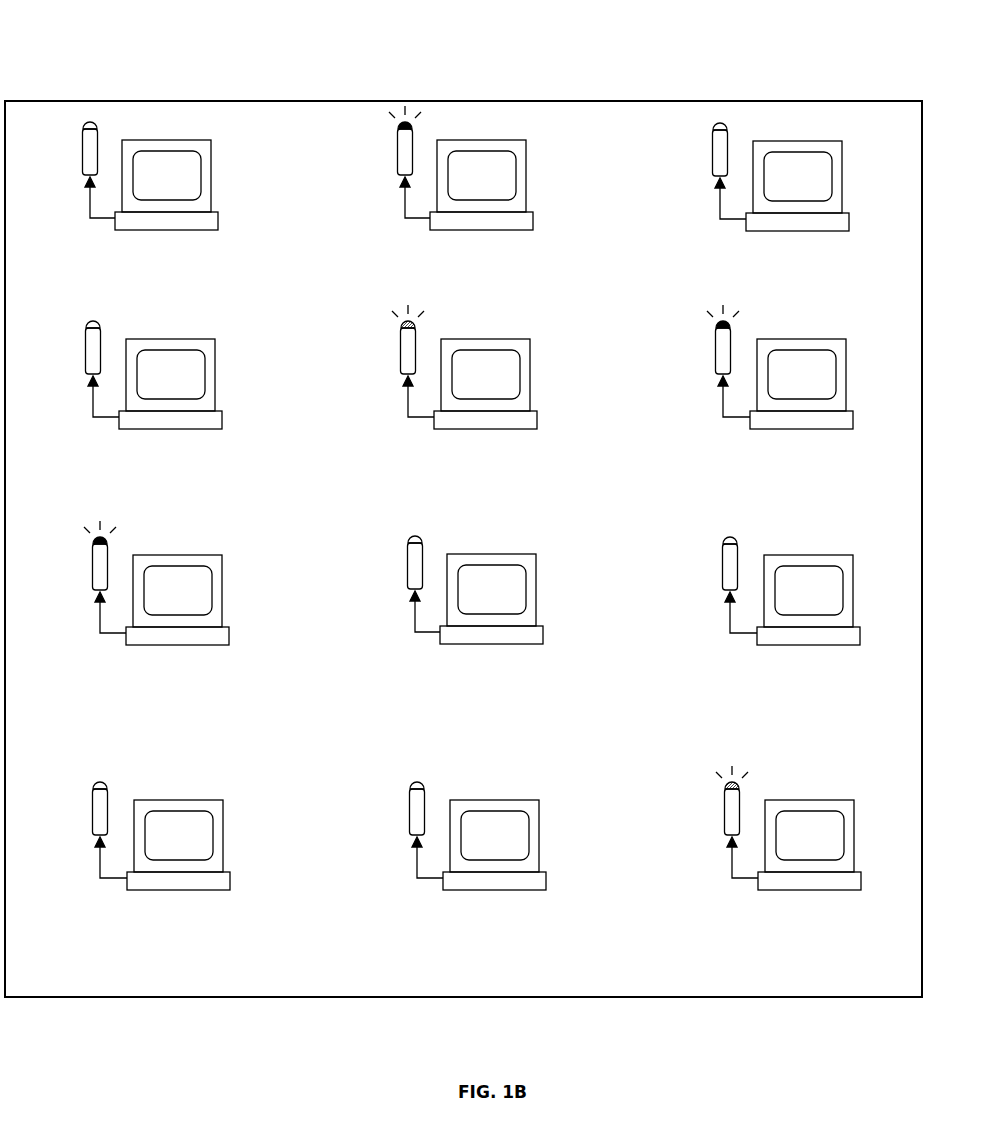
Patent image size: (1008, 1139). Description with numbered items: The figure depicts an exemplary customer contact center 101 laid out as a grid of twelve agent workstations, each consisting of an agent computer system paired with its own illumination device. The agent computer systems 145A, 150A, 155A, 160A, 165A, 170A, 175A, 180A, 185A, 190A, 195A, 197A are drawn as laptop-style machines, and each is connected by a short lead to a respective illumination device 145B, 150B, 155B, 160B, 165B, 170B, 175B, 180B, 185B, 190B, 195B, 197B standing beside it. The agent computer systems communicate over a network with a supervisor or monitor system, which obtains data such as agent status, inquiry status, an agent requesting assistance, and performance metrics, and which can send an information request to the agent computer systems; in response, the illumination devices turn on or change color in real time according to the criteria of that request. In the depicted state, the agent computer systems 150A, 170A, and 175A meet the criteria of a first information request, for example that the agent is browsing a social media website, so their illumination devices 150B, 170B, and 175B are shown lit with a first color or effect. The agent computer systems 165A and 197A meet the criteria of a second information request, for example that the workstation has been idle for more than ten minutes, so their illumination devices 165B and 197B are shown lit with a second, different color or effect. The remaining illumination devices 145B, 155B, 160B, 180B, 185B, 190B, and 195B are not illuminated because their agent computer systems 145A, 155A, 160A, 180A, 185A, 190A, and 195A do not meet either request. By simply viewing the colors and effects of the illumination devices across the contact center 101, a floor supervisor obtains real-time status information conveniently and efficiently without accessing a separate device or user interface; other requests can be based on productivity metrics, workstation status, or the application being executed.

The customer contact center 101 is at (117, 80).
The agent computer system 145A is at (152, 222).
The illumination device 145B is at (78, 153).
The agent computer system 150A is at (473, 222).
The illumination device 150B is at (393, 153).
The agent computer system 155A is at (789, 223).
The illumination device 155B is at (708, 154).
The agent computer system 160A is at (158, 421).
The illumination device 160B is at (83, 350).
The agent computer system 165A is at (474, 421).
The illumination device 165B is at (396, 352).
The agent computer system 170A is at (789, 421).
The illumination device 170B is at (711, 354).
The agent computer system 175A is at (174, 637).
The illumination device 175B is at (88, 569).
The agent computer system 180A is at (493, 636).
The illumination device 180B is at (403, 567).
The agent computer system 185A is at (815, 637).
The illumination device 185B is at (718, 565).
The agent computer system 190A is at (198, 882).
The illumination device 190B is at (88, 813).
The agent computer system 195A is at (513, 882).
The illumination device 195B is at (405, 813).
The agent computer system 197A is at (844, 882).
The illumination device 197B is at (720, 811).